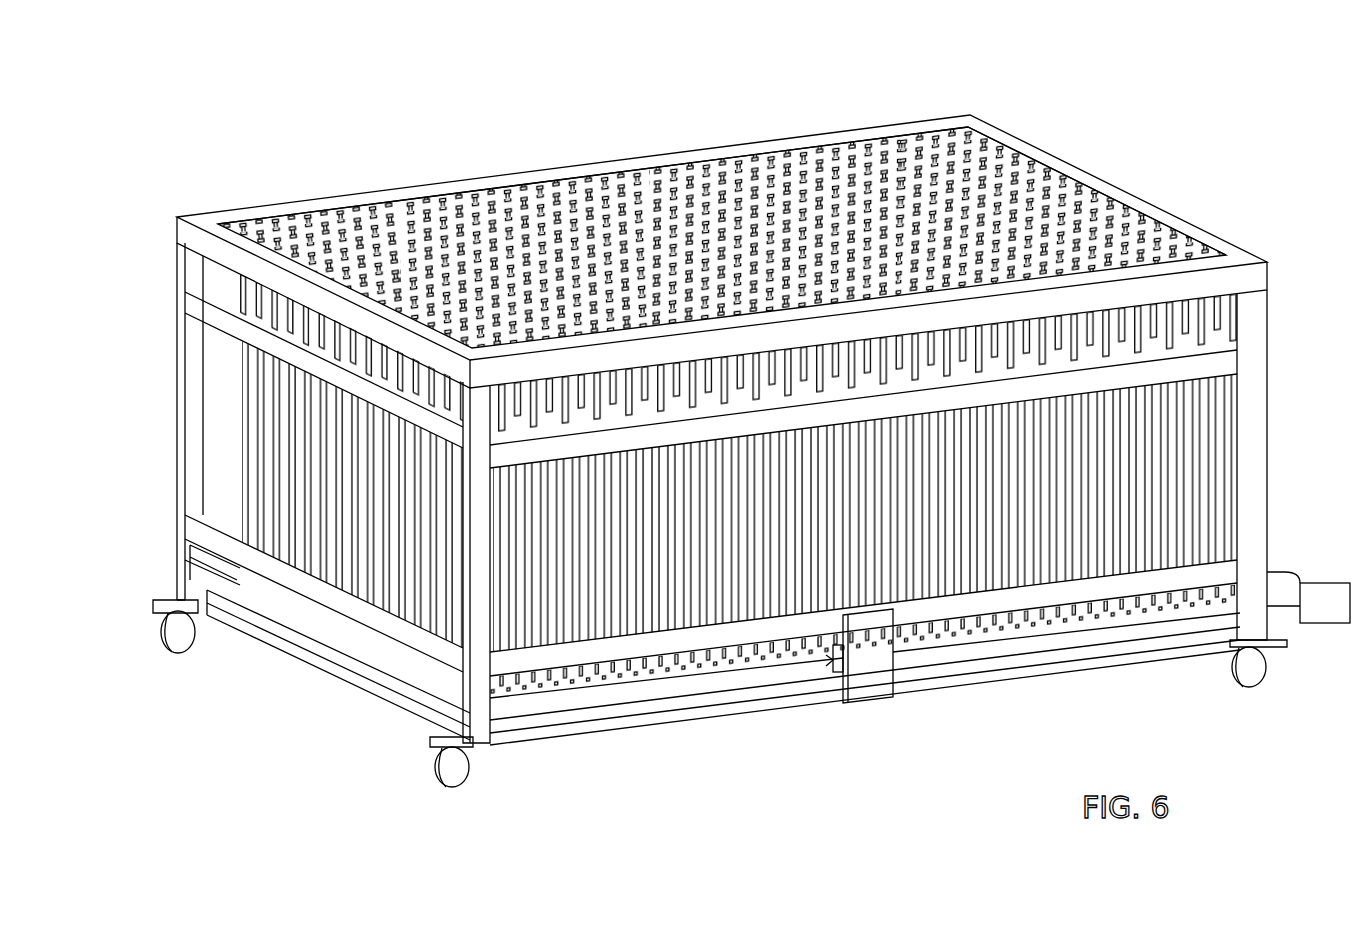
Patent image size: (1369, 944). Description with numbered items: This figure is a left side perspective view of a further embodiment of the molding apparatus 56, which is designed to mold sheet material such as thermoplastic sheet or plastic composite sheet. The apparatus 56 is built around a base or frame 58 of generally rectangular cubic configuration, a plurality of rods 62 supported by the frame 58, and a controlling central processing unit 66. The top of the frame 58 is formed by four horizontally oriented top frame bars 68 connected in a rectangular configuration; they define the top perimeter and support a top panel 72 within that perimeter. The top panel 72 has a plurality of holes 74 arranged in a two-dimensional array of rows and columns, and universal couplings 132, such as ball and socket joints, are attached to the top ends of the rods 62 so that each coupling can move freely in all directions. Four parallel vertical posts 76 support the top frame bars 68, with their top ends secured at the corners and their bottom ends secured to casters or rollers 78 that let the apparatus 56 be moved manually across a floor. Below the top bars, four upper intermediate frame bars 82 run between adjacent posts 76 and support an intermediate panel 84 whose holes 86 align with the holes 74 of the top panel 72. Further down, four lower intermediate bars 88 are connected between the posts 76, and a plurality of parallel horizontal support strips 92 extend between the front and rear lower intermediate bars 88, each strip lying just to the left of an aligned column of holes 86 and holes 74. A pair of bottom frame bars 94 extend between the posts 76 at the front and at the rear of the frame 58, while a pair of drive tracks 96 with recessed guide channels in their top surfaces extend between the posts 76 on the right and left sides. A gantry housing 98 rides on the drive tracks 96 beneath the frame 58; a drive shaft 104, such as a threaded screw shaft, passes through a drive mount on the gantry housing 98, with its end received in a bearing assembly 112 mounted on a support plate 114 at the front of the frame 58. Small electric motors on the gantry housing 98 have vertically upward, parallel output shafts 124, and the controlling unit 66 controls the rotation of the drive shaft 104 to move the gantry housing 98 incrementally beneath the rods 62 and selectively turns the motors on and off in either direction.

The apparatus 56 is at (410, 90).
The frame 58 is at (178, 440).
The rods 62 is at (245, 395).
The controlling central processing unit 66 is at (1340, 625).
The top frame bars 68 is at (262, 213).
The top panel 72 is at (708, 160).
The holes 74 is at (668, 165).
The posts 76 is at (176, 432).
The casters or rollers 78 is at (160, 635).
The upper intermediate frame bars 82 is at (228, 298).
The intermediate panel 84 is at (1200, 340).
The holes 86 is at (262, 336).
The lower intermediate bars 88 is at (225, 505).
The support strips 92 is at (330, 580).
The bottom frame bars 94 is at (195, 550).
The drive tracks 96 is at (345, 672).
The gantry housing 98 is at (655, 700).
The drive shaft 104 is at (835, 668).
The bearing assembly 112 is at (838, 674).
The support plate 114 is at (868, 665).
The output shafts 124 is at (588, 690).
The universal couplings 132 is at (552, 178).